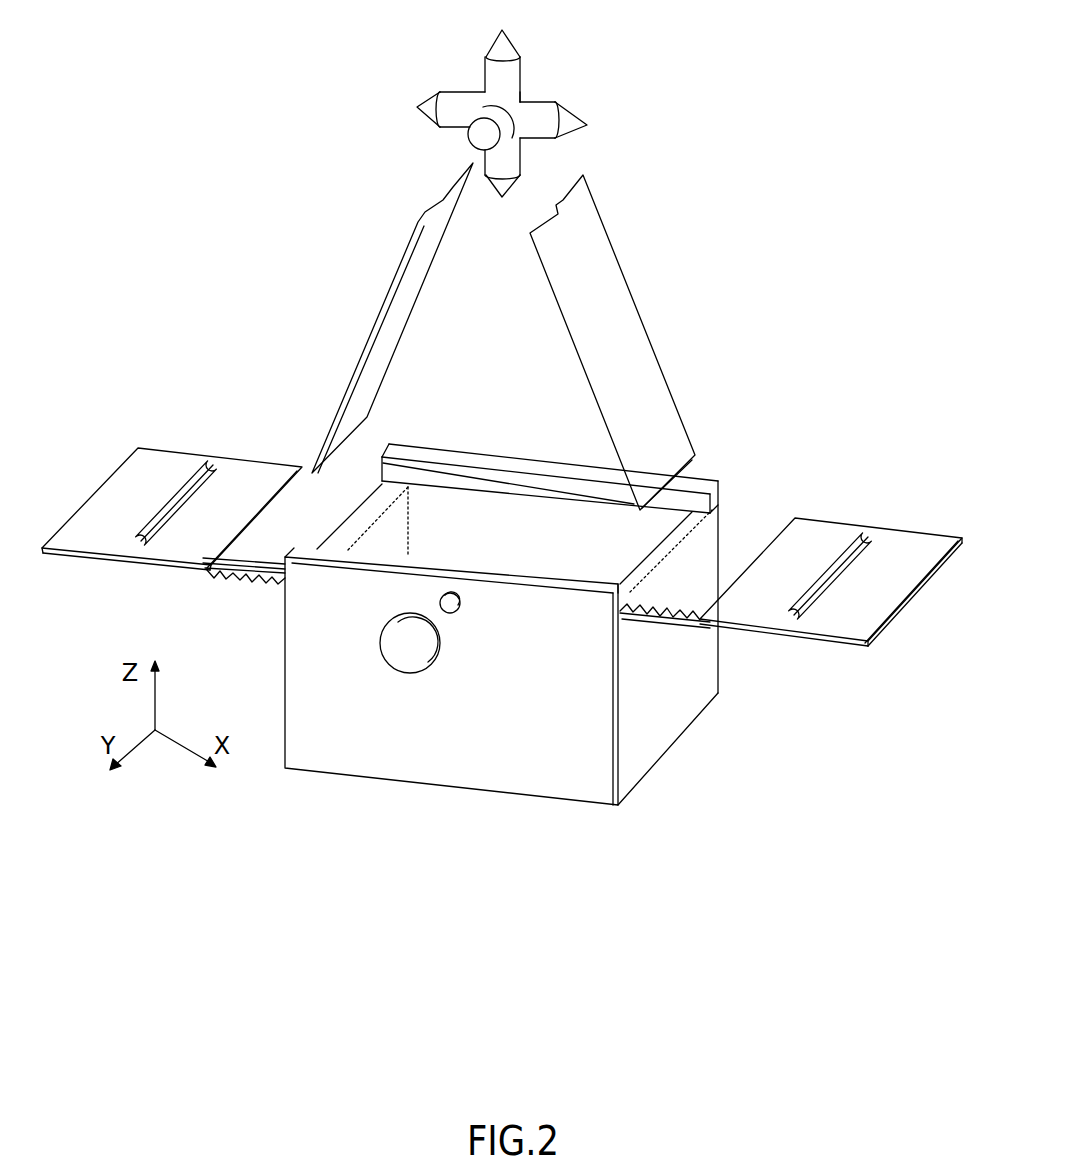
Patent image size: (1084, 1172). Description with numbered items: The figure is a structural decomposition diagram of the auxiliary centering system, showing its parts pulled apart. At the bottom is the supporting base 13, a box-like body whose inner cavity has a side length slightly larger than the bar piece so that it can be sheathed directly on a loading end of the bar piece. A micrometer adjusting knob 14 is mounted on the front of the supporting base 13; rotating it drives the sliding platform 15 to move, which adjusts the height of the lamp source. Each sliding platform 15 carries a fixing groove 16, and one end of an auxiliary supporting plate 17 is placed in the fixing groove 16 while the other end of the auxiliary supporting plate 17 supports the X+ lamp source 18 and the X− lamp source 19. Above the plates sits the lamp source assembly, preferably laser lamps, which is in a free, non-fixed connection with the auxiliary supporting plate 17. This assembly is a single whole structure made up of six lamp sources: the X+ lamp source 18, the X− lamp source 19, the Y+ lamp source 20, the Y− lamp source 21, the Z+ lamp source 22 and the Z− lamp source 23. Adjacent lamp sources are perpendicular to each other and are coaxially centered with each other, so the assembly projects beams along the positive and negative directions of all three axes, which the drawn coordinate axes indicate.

The supporting base 13 is at (338, 652).
The micrometer adjusting knob 14 is at (412, 655).
The sliding platform 15 is at (183, 468).
The fixing groove 16 is at (140, 523).
The auxiliary supporting plate 17 is at (380, 317).
The X+ lamp source 18 is at (440, 105).
The X− lamp source 19 is at (565, 124).
The Y+ lamp source 20 is at (476, 137).
The Y− lamp source 21 is at (538, 90).
The Z+ lamp source 22 is at (505, 50).
The Z− lamp source 23 is at (498, 185).